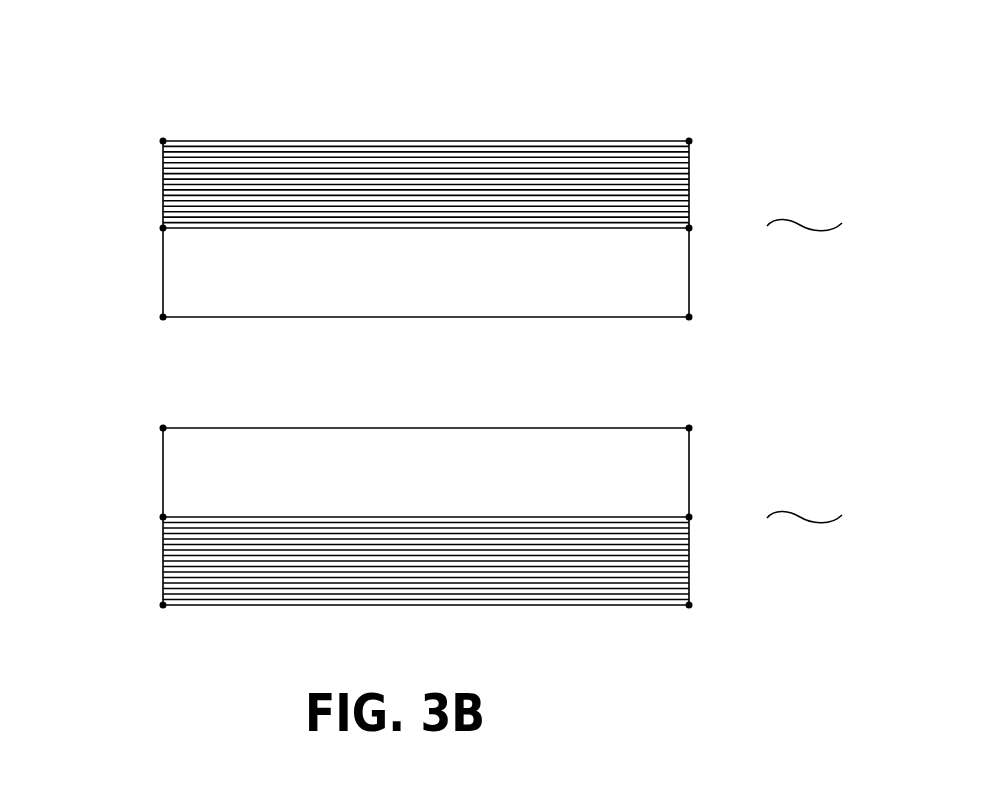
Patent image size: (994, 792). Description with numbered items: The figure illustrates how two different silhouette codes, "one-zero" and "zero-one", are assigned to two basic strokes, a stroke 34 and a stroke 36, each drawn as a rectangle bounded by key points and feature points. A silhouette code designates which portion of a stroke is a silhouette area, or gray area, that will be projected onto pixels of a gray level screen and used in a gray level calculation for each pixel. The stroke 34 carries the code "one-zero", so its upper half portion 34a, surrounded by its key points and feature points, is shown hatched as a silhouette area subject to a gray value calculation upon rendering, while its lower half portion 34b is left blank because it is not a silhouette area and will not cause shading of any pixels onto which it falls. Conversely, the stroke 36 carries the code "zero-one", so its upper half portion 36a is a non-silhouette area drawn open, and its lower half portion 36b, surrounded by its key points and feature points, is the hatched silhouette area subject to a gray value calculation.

The stroke 34 is at (477, 201).
The upper half portion 34a is at (343, 162).
The lower half portion 34b is at (415, 305).
The stroke 36 is at (477, 505).
The upper half portion 36a is at (425, 443).
The lower half portion 36b is at (483, 588).